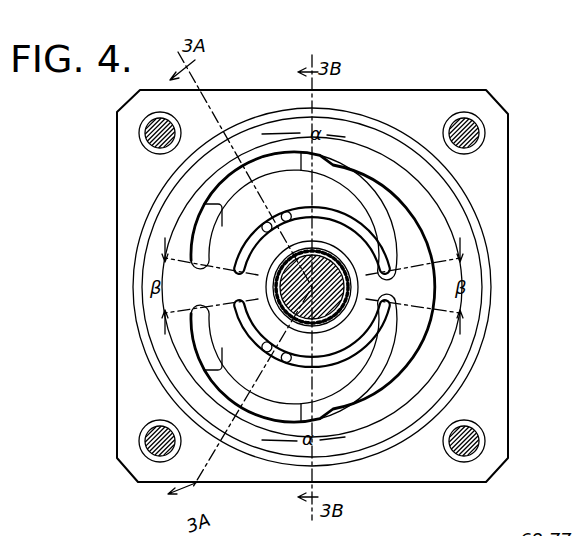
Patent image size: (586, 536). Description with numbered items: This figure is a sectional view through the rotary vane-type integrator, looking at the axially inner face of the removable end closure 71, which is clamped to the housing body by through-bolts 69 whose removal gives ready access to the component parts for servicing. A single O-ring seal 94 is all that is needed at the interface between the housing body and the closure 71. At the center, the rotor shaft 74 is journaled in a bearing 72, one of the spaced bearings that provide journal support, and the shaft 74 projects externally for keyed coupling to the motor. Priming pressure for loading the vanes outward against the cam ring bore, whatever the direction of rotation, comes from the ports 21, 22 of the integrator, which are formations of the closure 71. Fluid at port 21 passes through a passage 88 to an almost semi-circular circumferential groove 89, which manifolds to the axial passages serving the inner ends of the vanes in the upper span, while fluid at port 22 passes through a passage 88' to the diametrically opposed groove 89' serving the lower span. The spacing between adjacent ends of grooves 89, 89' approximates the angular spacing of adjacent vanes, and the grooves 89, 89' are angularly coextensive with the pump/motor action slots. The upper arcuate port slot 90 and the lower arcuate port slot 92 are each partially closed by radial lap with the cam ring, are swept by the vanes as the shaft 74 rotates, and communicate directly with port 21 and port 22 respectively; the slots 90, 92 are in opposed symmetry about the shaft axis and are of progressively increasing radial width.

The port 21 is at (206, 210).
The port 22 is at (207, 390).
The bolts 69 is at (486, 134).
The end closure 71 is at (256, 97).
The bearing 72 is at (276, 285).
The rotor shaft 74 is at (356, 285).
The passage 88 is at (290, 210).
The circumferential groove 89 is at (312, 233).
The passage 88' is at (293, 367).
The circumferential groove 89' is at (312, 342).
The upper arcuate port slot 90 is at (347, 175).
The lower arcuate port slot 92 is at (390, 367).
The O-ring seal 94 is at (380, 122).